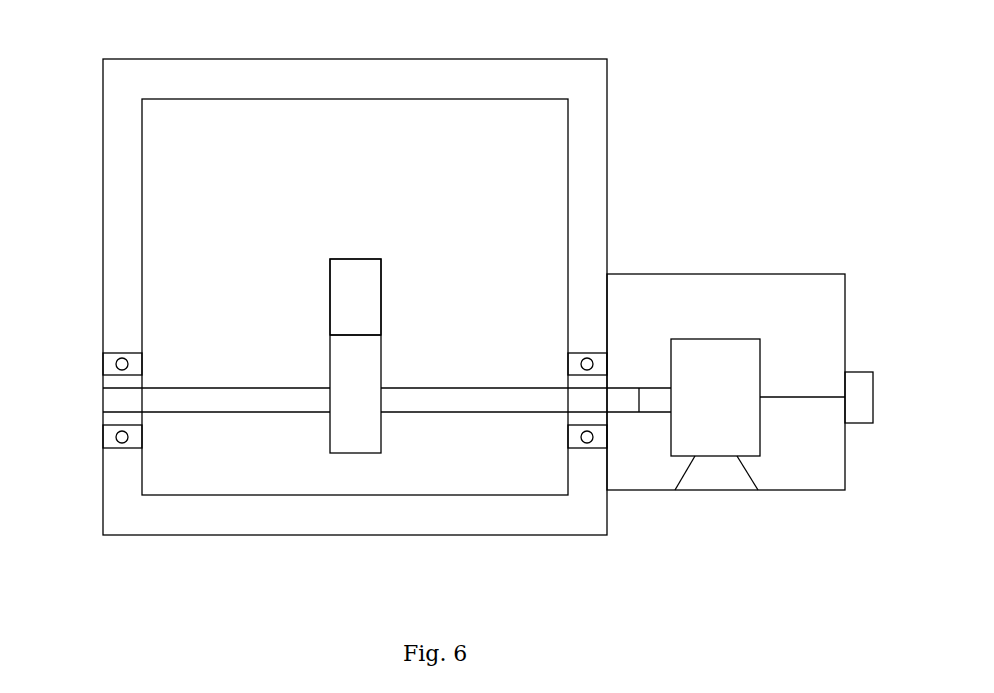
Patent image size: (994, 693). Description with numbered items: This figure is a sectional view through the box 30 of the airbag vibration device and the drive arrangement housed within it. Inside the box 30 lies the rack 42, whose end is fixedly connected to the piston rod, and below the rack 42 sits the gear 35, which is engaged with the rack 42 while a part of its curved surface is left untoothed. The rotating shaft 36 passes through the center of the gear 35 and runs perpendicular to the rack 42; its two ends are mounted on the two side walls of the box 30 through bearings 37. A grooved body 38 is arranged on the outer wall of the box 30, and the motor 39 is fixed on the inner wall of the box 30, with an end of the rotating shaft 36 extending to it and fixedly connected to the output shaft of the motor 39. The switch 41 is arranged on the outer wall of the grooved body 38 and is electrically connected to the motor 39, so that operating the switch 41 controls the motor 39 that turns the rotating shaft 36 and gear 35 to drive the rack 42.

The box 30 is at (270, 59).
The gear 35 is at (355, 453).
The rotating shaft 36 is at (460, 412).
The bearing 37 is at (117, 352).
The grooved body 38 is at (813, 274).
The motor 39 is at (717, 339).
The switch 41 is at (873, 395).
The rack 42 is at (355, 259).